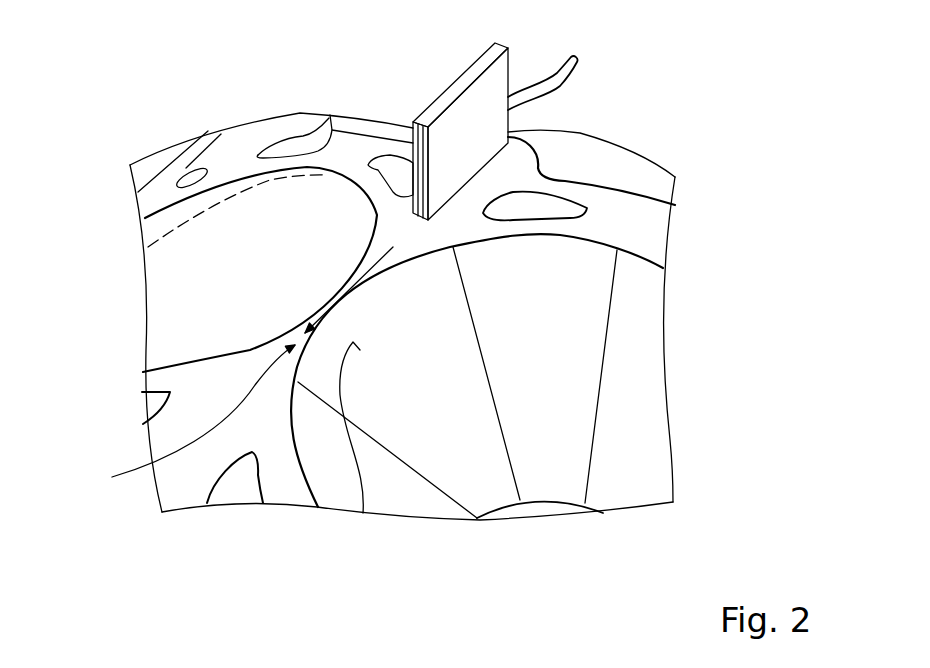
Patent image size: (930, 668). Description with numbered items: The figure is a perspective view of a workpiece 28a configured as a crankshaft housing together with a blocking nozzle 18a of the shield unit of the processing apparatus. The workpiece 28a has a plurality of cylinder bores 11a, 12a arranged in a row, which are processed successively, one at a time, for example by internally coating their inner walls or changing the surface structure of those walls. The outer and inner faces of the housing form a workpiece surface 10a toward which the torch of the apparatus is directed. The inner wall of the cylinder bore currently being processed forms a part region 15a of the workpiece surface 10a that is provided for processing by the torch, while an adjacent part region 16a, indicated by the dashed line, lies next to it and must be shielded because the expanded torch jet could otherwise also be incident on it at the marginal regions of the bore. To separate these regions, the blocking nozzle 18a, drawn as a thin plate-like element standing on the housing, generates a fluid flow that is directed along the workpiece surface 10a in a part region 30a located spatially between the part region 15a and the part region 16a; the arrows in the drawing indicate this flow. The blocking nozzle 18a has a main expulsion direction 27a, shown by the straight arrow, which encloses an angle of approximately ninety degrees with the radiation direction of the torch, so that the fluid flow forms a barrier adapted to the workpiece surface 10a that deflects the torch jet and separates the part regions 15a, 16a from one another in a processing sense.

The workpiece surface 10a is at (525, 160).
The cylinder bore 11a is at (425, 495).
The cylinder bore 12a is at (168, 343).
The part region 15a is at (363, 513).
The part region 16a is at (217, 195).
The blocking nozzle 18a is at (477, 70).
The main expulsion direction 27a is at (353, 280).
The workpiece 28a is at (643, 233).
The part region 30a is at (180, 419).